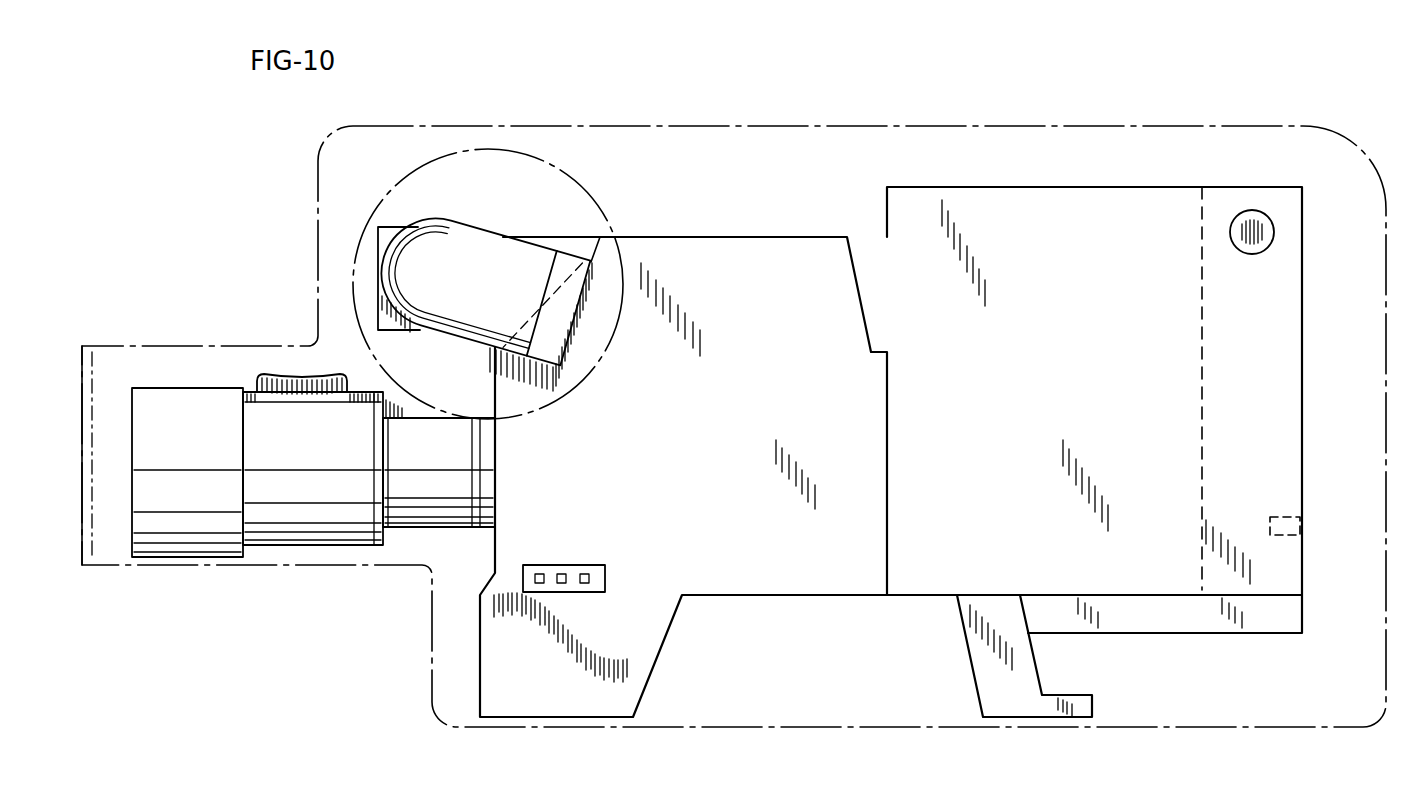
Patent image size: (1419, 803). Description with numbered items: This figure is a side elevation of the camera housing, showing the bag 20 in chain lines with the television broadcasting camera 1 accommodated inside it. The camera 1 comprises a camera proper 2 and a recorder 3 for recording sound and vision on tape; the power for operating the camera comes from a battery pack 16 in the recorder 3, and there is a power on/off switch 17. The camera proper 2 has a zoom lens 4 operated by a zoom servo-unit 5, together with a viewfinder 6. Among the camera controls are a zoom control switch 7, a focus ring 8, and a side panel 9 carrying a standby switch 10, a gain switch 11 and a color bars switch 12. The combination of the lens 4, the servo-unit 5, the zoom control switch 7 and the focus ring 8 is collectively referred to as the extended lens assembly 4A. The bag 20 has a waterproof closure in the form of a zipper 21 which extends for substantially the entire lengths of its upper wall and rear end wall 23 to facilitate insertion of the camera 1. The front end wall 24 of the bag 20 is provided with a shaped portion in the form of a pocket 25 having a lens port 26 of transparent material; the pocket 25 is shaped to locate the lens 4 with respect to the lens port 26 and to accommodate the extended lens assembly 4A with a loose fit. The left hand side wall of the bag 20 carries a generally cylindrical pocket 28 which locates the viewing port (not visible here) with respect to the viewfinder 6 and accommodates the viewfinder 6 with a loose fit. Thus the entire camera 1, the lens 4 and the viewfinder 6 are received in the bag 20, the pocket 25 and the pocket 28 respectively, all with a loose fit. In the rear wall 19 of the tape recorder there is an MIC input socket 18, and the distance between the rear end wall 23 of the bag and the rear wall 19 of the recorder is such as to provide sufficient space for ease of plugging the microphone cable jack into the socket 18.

The television broadcasting camera 1 is at (778, 602).
The camera proper 2 is at (730, 386).
The recorder 3 is at (1027, 398).
The zoom lens 4 is at (341, 554).
The extended lens assembly 4A is at (175, 382).
The zoom servo-unit 5 is at (402, 405).
The viewfinder 6 is at (452, 240).
The zoom control switch 7 is at (305, 378).
The focus ring 8 is at (190, 522).
The side panel 9 is at (603, 576).
The standby switch 10 is at (540, 573).
The gain switch 11 is at (563, 573).
The color bars switch 12 is at (585, 573).
The battery pack 16 is at (1212, 200).
The power on/off switch 17 is at (1273, 227).
The MIC input socket 18 is at (1300, 527).
The rear wall of the tape recorder 19 is at (1302, 415).
The bag 20 is at (1044, 731).
The zipper 21 is at (907, 126).
The rear end wall 23 is at (1386, 615).
The front end wall 24 is at (318, 206).
The pocket 25 is at (228, 345).
The lens port 26 is at (78, 414).
The cylindrical pocket 28 is at (582, 212).